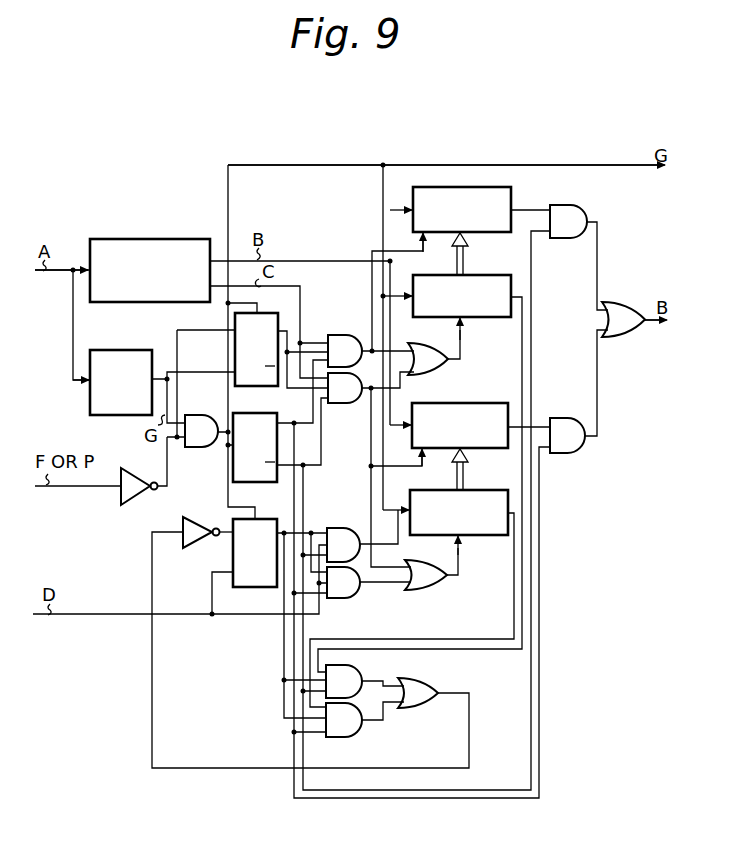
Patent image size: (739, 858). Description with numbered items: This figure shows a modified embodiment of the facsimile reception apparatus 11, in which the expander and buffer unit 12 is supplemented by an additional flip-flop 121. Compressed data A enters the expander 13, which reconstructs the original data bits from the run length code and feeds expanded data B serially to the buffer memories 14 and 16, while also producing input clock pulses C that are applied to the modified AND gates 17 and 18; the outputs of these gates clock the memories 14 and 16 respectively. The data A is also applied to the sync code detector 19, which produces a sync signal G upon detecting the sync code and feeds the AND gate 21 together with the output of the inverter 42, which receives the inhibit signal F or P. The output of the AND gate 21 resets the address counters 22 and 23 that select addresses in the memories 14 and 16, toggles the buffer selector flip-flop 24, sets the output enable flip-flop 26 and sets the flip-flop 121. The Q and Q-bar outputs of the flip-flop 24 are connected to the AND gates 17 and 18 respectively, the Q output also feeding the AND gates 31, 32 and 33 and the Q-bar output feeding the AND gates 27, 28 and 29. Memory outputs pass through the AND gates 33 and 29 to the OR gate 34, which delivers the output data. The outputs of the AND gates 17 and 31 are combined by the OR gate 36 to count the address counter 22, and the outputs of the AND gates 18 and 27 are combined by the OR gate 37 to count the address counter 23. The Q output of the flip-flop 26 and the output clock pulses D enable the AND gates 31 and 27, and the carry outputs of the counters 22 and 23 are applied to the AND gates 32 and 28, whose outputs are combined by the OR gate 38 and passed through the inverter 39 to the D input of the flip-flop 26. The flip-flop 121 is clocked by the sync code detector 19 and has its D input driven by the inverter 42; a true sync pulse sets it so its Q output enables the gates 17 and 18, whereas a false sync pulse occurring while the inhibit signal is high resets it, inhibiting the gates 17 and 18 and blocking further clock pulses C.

The facsimile reception apparatus 11 is at (226, 84).
The expander and buffer unit 12 is at (308, 115).
The expander 13 is at (106, 239).
The buffer memory 14 is at (511, 187).
The buffer memory 16 is at (503, 402).
The AND gate 17 is at (368, 298).
The AND gate 18 is at (366, 420).
The sync code detector 19 is at (127, 349).
The AND gate 21 is at (200, 448).
The address counter 22 is at (503, 275).
The address counter 23 is at (493, 488).
The buffer selector flip-flop 24 is at (275, 413).
The output enable flip-flop 26 is at (266, 519).
The AND gate 27 is at (344, 599).
The AND gate 28 is at (358, 738).
The AND gate 29 is at (562, 418).
The AND gate 31 is at (340, 528).
The AND gate 32 is at (359, 677).
The AND gate 33 is at (583, 210).
The OR gate 34 is at (630, 305).
The OR gate 36 is at (437, 375).
The OR gate 37 is at (433, 590).
The OR gate 38 is at (428, 685).
The inverter 39 is at (193, 548).
The inverter 42 is at (139, 477).
The flip-flop 121 is at (278, 313).